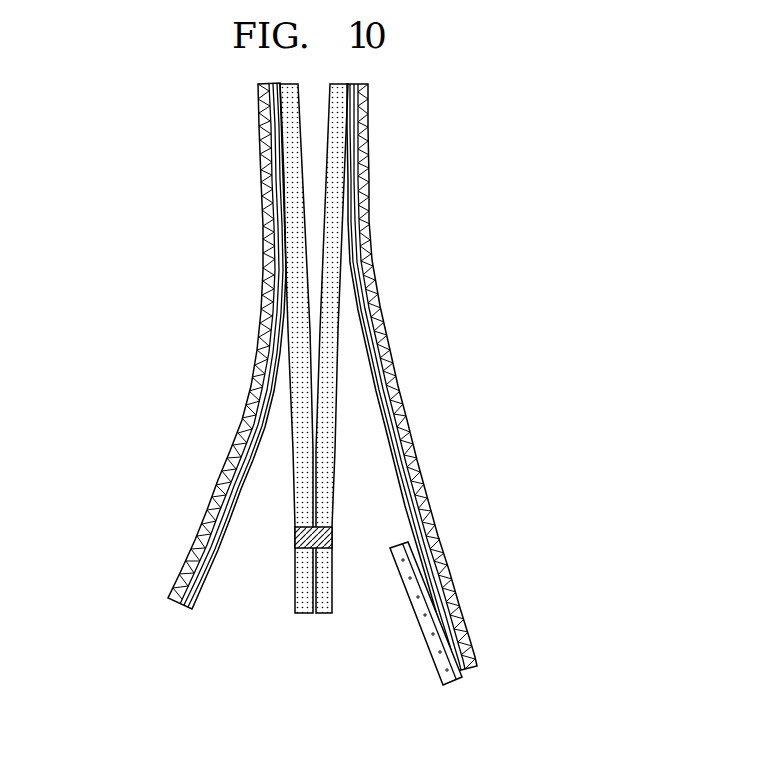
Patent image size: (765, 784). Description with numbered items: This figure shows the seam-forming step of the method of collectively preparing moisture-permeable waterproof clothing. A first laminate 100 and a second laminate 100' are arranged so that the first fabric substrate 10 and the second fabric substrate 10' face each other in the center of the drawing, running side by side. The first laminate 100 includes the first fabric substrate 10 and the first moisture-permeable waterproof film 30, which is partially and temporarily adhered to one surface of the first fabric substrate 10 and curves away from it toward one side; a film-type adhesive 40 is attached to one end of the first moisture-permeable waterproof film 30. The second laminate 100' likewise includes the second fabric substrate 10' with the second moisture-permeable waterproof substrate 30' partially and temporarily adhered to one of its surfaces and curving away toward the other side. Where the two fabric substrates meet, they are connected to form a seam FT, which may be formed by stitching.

The first laminate 100 is at (495, 225).
The second laminate 100' is at (132, 225).
The first fabric substrate 10 is at (348, 348).
The second fabric substrate 10' is at (274, 348).
The first moisture-permeable waterproof film 30 is at (412, 378).
The second moisture-permeable waterproof substrate 30' is at (224, 346).
The film-type adhesive 40 is at (418, 615).
The seam FT is at (297, 540).